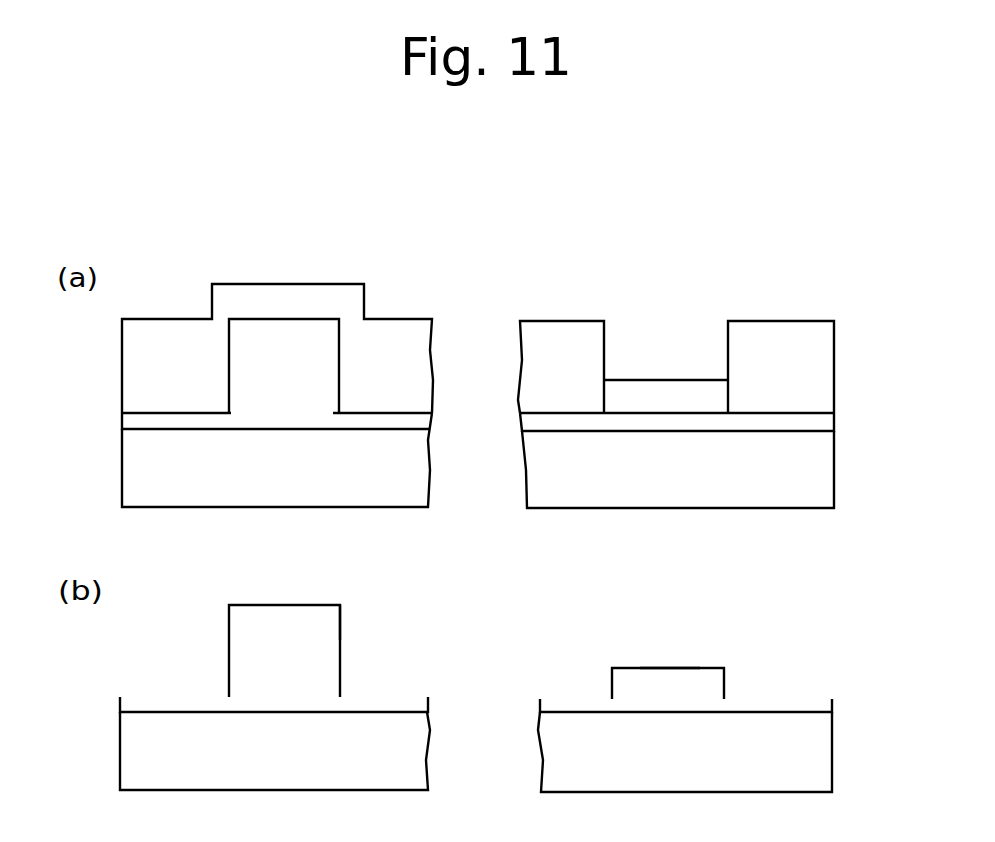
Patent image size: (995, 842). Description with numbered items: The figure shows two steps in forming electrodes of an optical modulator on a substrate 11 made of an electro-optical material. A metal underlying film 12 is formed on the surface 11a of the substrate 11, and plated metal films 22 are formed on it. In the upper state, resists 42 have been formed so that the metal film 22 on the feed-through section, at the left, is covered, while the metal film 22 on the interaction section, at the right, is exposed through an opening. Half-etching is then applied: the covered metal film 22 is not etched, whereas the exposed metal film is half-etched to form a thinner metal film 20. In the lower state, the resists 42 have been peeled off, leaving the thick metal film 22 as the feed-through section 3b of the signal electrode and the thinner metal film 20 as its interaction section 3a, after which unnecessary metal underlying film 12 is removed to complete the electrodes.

The substrate material 11 is at (820, 487).
The surface of the substrate 11a is at (817, 428).
The metal underlying film 12 is at (802, 420).
The resists 42 is at (167, 335).
The metal film 22 is at (286, 330).
The thinner metal film 20 is at (658, 392).
The feed-through section of signal electrode 3b is at (330, 617).
The interaction section of signal electrode 3a is at (674, 680).